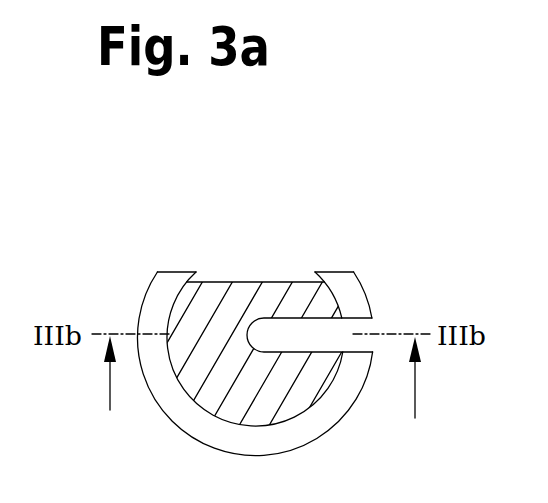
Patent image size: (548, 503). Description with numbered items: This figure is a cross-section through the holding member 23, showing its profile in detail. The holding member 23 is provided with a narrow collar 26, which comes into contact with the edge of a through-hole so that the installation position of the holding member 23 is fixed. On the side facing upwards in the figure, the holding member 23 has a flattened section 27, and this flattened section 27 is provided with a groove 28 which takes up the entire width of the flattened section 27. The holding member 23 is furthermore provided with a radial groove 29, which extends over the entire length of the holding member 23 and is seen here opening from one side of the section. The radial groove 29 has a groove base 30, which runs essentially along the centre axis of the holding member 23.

The holding member 23 is at (298, 222).
The narrow collar 26 is at (367, 378).
The flattened section 27 is at (338, 272).
The groove 28 is at (198, 275).
The radial groove 29 is at (377, 325).
The groove base 30 is at (217, 393).